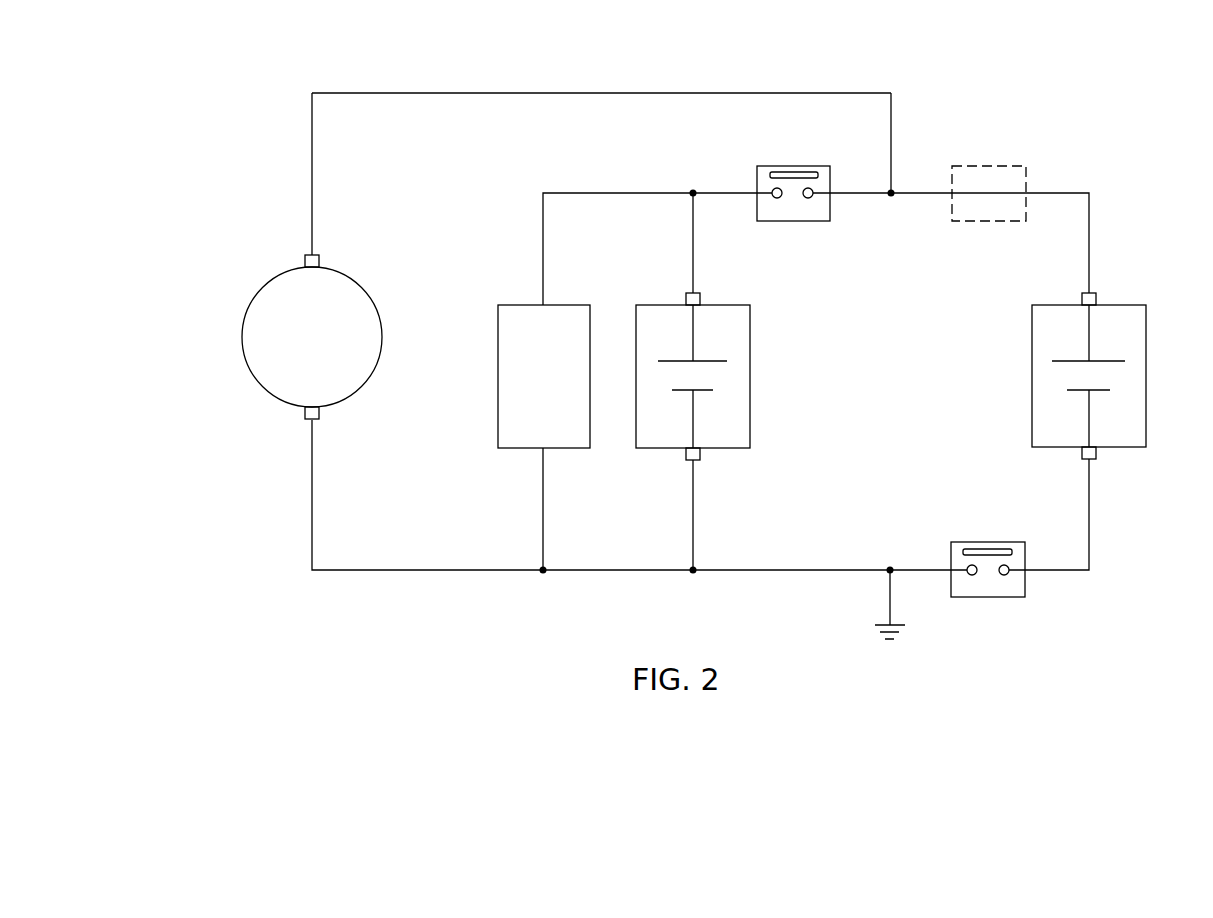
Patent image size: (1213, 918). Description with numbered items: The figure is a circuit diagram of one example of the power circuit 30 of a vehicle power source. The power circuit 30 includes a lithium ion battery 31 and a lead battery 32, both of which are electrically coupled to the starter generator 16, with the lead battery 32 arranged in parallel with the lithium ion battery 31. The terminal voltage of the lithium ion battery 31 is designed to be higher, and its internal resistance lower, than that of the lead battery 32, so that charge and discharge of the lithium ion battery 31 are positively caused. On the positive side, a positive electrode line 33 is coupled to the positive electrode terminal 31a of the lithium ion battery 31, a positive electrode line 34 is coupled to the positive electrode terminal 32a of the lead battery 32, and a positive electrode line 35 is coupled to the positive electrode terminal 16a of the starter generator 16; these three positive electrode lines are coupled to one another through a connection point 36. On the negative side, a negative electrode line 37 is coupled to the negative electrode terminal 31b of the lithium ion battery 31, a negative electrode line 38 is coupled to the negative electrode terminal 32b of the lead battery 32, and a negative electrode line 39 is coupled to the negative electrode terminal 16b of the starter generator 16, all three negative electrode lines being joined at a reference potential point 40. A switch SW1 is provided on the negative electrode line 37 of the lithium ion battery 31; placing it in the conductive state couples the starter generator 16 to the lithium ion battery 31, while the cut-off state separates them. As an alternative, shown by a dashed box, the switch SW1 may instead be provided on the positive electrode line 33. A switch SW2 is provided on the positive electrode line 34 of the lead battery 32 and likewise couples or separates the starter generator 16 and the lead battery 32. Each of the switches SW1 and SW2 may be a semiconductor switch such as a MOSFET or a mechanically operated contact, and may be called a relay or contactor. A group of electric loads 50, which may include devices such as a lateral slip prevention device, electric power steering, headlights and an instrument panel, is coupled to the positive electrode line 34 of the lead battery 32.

The power circuit 30 is at (238, 56).
The starter generator 16 is at (380, 313).
The positive electrode terminal 16a is at (305, 256).
The negative electrode terminal 16b is at (305, 420).
The lithium ion battery 31 is at (1146, 376).
The positive electrode terminal 31a is at (1096, 300).
The negative electrode terminal 31b is at (1096, 453).
The lead battery 32 is at (750, 376).
The positive electrode terminal 32a is at (686, 295).
The negative electrode terminal 32b is at (686, 456).
The positive electrode line 33 is at (919, 192).
The positive electrode line 34 is at (624, 192).
The positive electrode line 35 is at (570, 92).
The connection point 36 is at (891, 198).
The negative electrode line 37 is at (919, 569).
The negative electrode line 38 is at (695, 512).
The negative electrode line 39 is at (312, 533).
The reference potential point 40 is at (888, 572).
The group of electric loads 50 is at (498, 400).
The switch SW1 is at (988, 221).
The switch SW2 is at (792, 221).